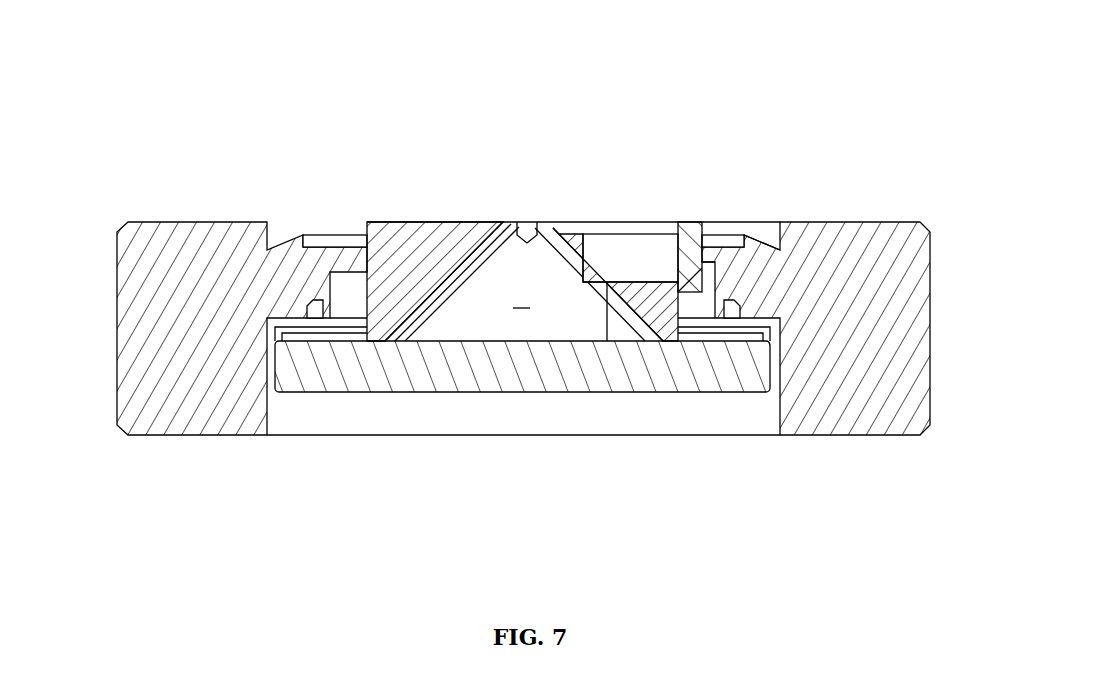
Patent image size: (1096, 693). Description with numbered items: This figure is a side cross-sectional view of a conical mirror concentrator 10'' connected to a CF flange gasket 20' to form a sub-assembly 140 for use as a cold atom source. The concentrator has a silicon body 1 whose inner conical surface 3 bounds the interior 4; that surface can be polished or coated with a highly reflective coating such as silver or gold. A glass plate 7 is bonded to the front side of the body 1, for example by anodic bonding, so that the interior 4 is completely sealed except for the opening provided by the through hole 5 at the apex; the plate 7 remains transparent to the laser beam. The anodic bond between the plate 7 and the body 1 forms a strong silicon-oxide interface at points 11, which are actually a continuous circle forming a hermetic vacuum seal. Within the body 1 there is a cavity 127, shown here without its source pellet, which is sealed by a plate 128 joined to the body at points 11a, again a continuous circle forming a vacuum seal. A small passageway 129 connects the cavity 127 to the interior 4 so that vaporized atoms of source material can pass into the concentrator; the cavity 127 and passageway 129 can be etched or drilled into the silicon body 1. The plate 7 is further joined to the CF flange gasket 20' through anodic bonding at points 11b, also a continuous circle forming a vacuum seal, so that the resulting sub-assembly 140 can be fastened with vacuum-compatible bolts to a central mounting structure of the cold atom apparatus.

The sub-assembly 140 is at (139, 116).
The CF flange gasket 20' is at (532, 376).
The conical mirror concentrator 10'' is at (535, 338).
The body 1 is at (408, 248).
The through hole 5 is at (533, 218).
The interior 4 is at (525, 284).
The inner conical surface 3 is at (453, 312).
The bonding points 11 is at (392, 345).
The plate 7 is at (360, 393).
The bonding points 11b is at (275, 347).
The cavity 127 is at (640, 242).
The passageway 129 is at (608, 276).
The bonding points 11a is at (683, 227).
The plate 128 is at (775, 246).